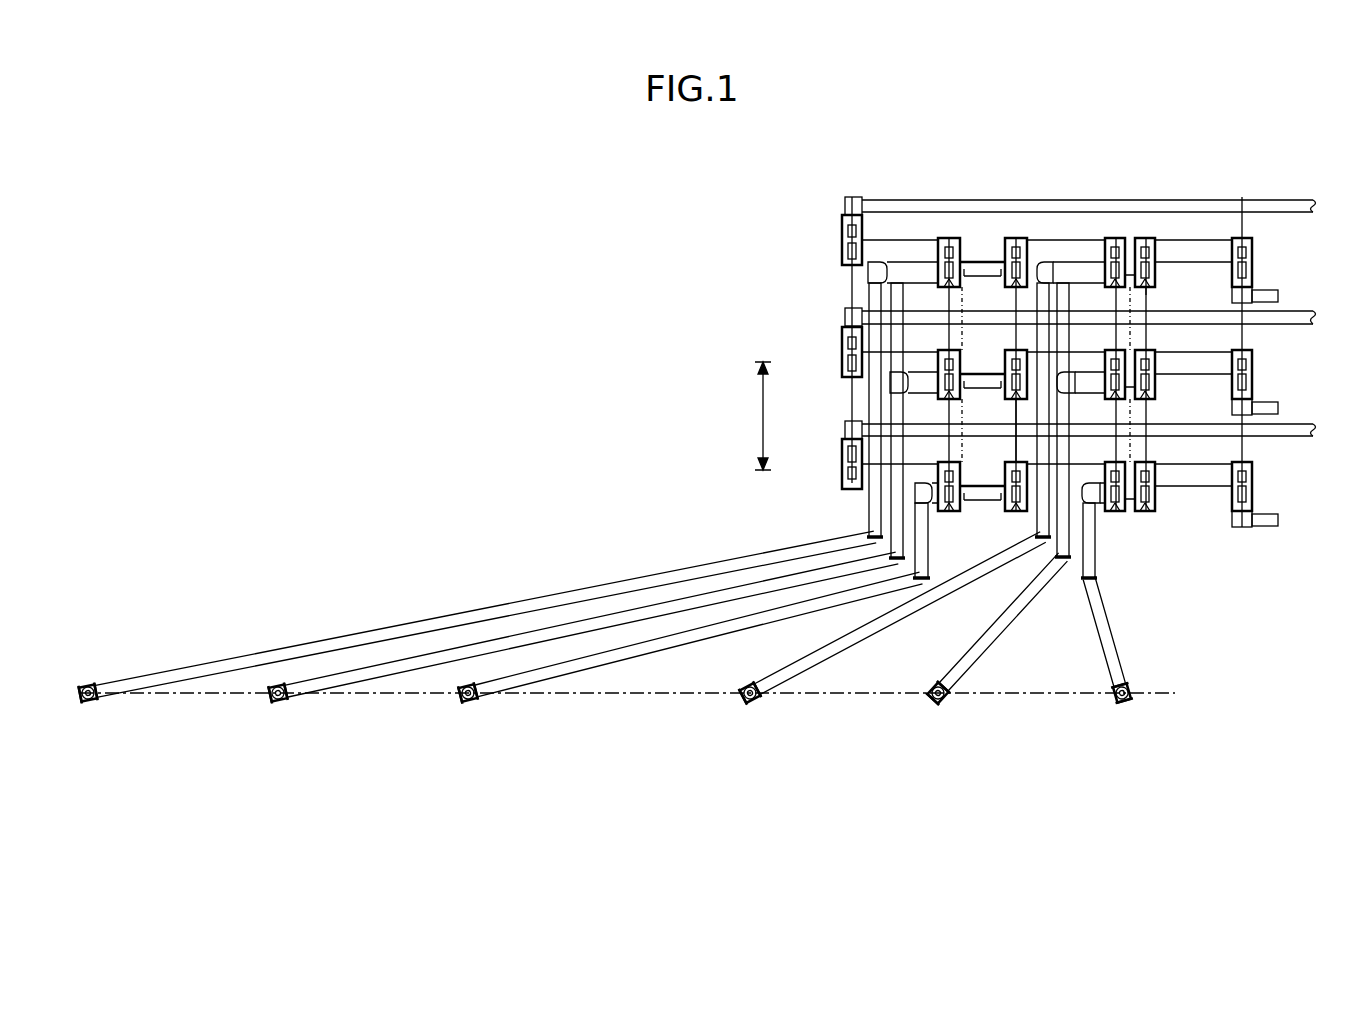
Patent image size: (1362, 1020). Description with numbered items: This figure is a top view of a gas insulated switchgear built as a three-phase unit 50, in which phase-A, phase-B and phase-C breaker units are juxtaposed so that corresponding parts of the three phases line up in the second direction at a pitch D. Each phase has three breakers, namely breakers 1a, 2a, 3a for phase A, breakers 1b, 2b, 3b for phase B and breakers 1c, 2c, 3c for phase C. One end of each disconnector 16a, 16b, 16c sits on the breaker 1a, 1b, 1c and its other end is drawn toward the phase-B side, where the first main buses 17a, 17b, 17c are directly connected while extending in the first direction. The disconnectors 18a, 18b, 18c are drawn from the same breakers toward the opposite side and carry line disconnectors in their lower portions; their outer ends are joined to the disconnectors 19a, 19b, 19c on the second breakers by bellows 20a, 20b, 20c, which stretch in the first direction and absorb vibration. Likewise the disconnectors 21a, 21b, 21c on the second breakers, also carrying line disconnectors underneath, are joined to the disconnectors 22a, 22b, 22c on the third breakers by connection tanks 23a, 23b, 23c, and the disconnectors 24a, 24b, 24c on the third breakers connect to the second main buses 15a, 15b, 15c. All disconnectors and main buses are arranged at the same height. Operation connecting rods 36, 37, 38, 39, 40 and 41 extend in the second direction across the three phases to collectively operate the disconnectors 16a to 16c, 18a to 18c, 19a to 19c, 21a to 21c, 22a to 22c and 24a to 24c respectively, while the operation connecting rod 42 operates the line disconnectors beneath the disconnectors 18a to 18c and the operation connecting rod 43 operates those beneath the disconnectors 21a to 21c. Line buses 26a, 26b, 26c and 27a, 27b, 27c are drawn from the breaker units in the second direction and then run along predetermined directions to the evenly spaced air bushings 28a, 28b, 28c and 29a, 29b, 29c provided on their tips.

The three-phase unit 50 is at (627, 224).
The pitch distance D is at (756, 416).
The breaker 1c is at (896, 240).
The breaker 1b is at (896, 352).
The breaker 1a is at (920, 464).
The breaker 2c is at (1070, 240).
The breaker 2b is at (1070, 352).
The breaker 2a is at (1088, 464).
The breaker 3c is at (1216, 240).
The breaker 3b is at (1211, 352).
The breaker 3a is at (1202, 464).
The phase-C main bus 15c is at (1278, 295).
The phase-B main bus 15b is at (1278, 404).
The phase-A main bus 15a is at (1265, 526).
The disconnector 16c is at (842, 232).
The disconnector 16b is at (842, 344).
The disconnector 16a is at (842, 455).
The phase-C main bus 17c is at (1265, 212).
The phase-B main bus 17b is at (1296, 324).
The phase-A main bus 17a is at (1264, 436).
The disconnector 18c is at (940, 238).
The disconnector 18b is at (940, 350).
The disconnector 18a is at (952, 511).
The disconnector 19c is at (1008, 238).
The disconnector 19b is at (1008, 350).
The disconnector 19a is at (1007, 511).
The bellows 20c is at (983, 262).
The bellows 20b is at (983, 374).
The bellows 20a is at (983, 486).
The disconnector 21c is at (1109, 238).
The disconnector 21b is at (1109, 350).
The disconnector 21a is at (1110, 511).
The disconnector 22c is at (1150, 238).
The disconnector 22b is at (1146, 350).
The disconnector 22a is at (1145, 511).
The connection tank 23c is at (1130, 240).
The connection tank 23b is at (1133, 388).
The connection tank 23a is at (1130, 500).
The disconnector 24c is at (1252, 268).
The disconnector 24b is at (1252, 379).
The disconnector 24a is at (1252, 490).
The phase-C line bus 26c is at (869, 399).
The phase-B line bus 26b is at (466, 652).
The phase-A line bus 26a is at (928, 552).
The phase-C line bus 27c is at (905, 607).
The phase-B line bus 27b is at (1003, 624).
The phase-A line bus 27a is at (1095, 568).
The air bushing 28c is at (91, 702).
The air bushing 28b is at (281, 702).
The air bushing 28a is at (468, 702).
The air bushing 29c is at (748, 702).
The air bushing 29b is at (938, 702).
The air bushing 29a is at (1123, 702).
The operation connecting rod 36 is at (852, 293).
The operation connecting rod 37 is at (949, 300).
The operation connecting rod 38 is at (1017, 411).
The operation connecting rod 39 is at (1116, 300).
The operation connecting rod 40 is at (1150, 292).
The operation connecting rod 41 is at (1242, 336).
The operation connecting rod 42 is at (964, 299).
The operation connecting rod 43 is at (1145, 299).